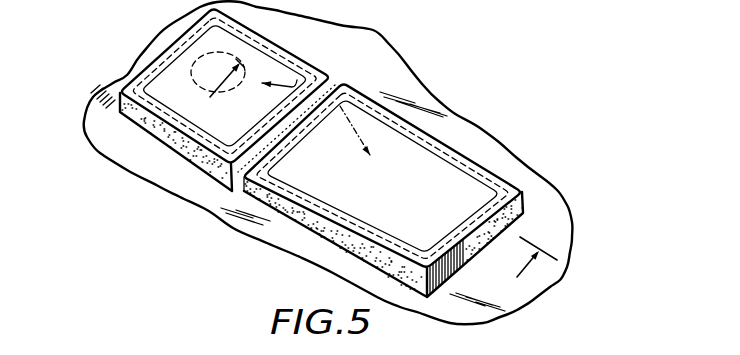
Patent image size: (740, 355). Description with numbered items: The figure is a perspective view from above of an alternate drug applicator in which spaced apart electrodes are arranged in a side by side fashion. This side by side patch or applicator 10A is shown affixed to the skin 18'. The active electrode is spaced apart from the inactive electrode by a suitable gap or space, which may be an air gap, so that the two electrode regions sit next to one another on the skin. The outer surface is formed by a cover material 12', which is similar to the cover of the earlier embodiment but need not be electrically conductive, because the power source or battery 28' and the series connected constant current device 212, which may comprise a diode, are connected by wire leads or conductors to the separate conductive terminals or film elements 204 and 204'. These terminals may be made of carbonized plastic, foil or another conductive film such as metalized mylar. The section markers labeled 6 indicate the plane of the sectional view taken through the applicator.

The side by side patch or applicator 10A is at (458, 133).
The cover material 12' is at (374, 239).
The skin 18' is at (224, 133).
The power source or battery 28' is at (217, 86).
The conductive terminal or film element 204 is at (343, 162).
The conductive terminal or film element 204' is at (85, 90).
The constant current device 212 is at (312, 57).
The section line 6- 6 is at (381, 182).